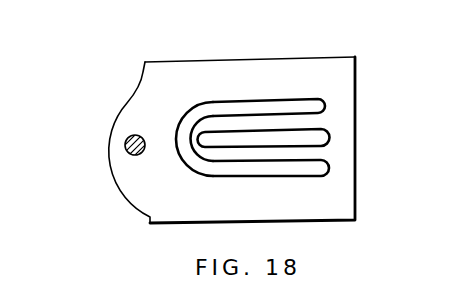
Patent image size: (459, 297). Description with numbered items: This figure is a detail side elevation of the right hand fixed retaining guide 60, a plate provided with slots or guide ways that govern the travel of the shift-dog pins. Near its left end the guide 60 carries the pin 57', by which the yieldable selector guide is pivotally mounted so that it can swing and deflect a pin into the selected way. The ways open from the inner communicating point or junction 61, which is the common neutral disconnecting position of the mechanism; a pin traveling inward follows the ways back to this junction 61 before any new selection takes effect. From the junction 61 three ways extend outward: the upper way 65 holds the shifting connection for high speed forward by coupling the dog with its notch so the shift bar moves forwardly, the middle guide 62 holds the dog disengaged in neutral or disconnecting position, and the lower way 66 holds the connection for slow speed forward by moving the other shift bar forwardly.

The fixed retaining guide 60 is at (333, 222).
The pin 57' is at (97, 140).
The way 65 is at (243, 103).
The junction 61 is at (190, 152).
The middle guide 62 is at (310, 128).
The lower way 66 is at (242, 177).